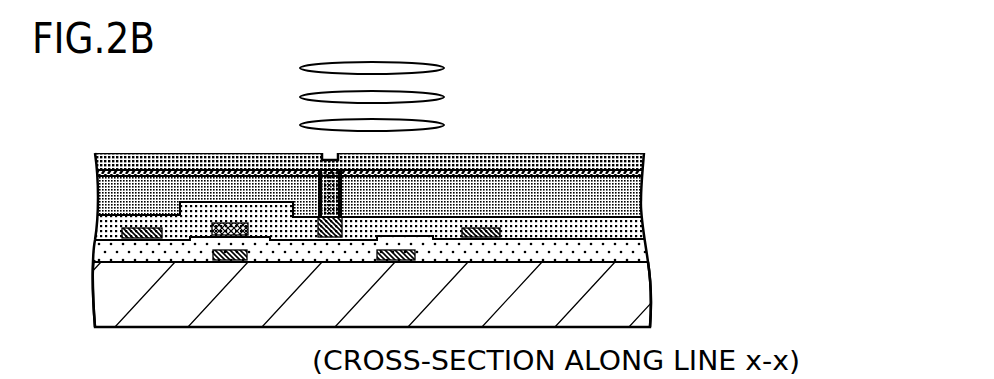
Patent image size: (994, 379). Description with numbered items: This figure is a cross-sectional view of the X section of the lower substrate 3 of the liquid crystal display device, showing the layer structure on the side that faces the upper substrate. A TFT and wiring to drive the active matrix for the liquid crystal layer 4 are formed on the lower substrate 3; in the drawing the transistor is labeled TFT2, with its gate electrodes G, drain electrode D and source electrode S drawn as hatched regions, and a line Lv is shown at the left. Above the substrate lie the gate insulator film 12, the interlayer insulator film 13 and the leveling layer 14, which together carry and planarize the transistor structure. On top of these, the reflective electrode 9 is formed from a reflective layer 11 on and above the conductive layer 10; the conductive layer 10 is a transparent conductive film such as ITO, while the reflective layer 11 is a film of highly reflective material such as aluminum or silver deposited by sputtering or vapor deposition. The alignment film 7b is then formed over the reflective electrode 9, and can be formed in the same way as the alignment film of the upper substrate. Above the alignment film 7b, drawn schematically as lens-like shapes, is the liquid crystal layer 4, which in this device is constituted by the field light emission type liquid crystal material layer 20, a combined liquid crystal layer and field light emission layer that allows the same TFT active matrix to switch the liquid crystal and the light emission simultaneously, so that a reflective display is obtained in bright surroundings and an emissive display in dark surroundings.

The lower substrate 3 is at (637, 304).
The liquid crystal layer 4 is at (404, 96).
The field light emission type liquid crystal material layer 20 is at (372, 96).
The alignment film 7b is at (644, 160).
The reflective electrode 9 is at (413, 182).
The conductive layer 10 is at (644, 177).
The reflective layer 11 is at (644, 171).
The gate insulator film 12 is at (648, 255).
The interlayer insulator film 13 is at (643, 225).
The leveling layer 14 is at (642, 203).
The power supply line Lv is at (117, 236).
The drain electrode D is at (319, 230).
The source electrode S is at (490, 230).
The gate electrode G is at (314, 269).
The thin film transistor TFT2 is at (334, 296).